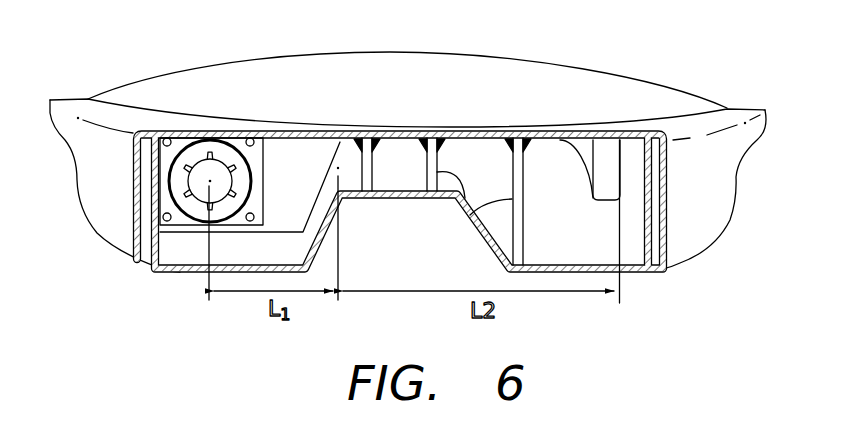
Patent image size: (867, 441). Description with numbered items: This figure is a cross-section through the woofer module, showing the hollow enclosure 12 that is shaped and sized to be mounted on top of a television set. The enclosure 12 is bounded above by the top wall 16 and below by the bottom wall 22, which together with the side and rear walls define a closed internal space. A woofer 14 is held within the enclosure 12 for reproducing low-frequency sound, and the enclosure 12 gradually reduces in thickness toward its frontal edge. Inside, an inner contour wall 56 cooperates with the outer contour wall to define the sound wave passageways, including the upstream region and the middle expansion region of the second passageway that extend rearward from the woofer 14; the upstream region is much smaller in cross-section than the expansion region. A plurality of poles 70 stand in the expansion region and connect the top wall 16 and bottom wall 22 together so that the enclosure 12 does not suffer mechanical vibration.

The enclosure 12 is at (436, 45).
The woofer 14 is at (170, 202).
The top wall 16 is at (280, 67).
The bottom wall 22 is at (180, 270).
The inner contour wall 56 is at (612, 185).
The poles 70 is at (468, 214).